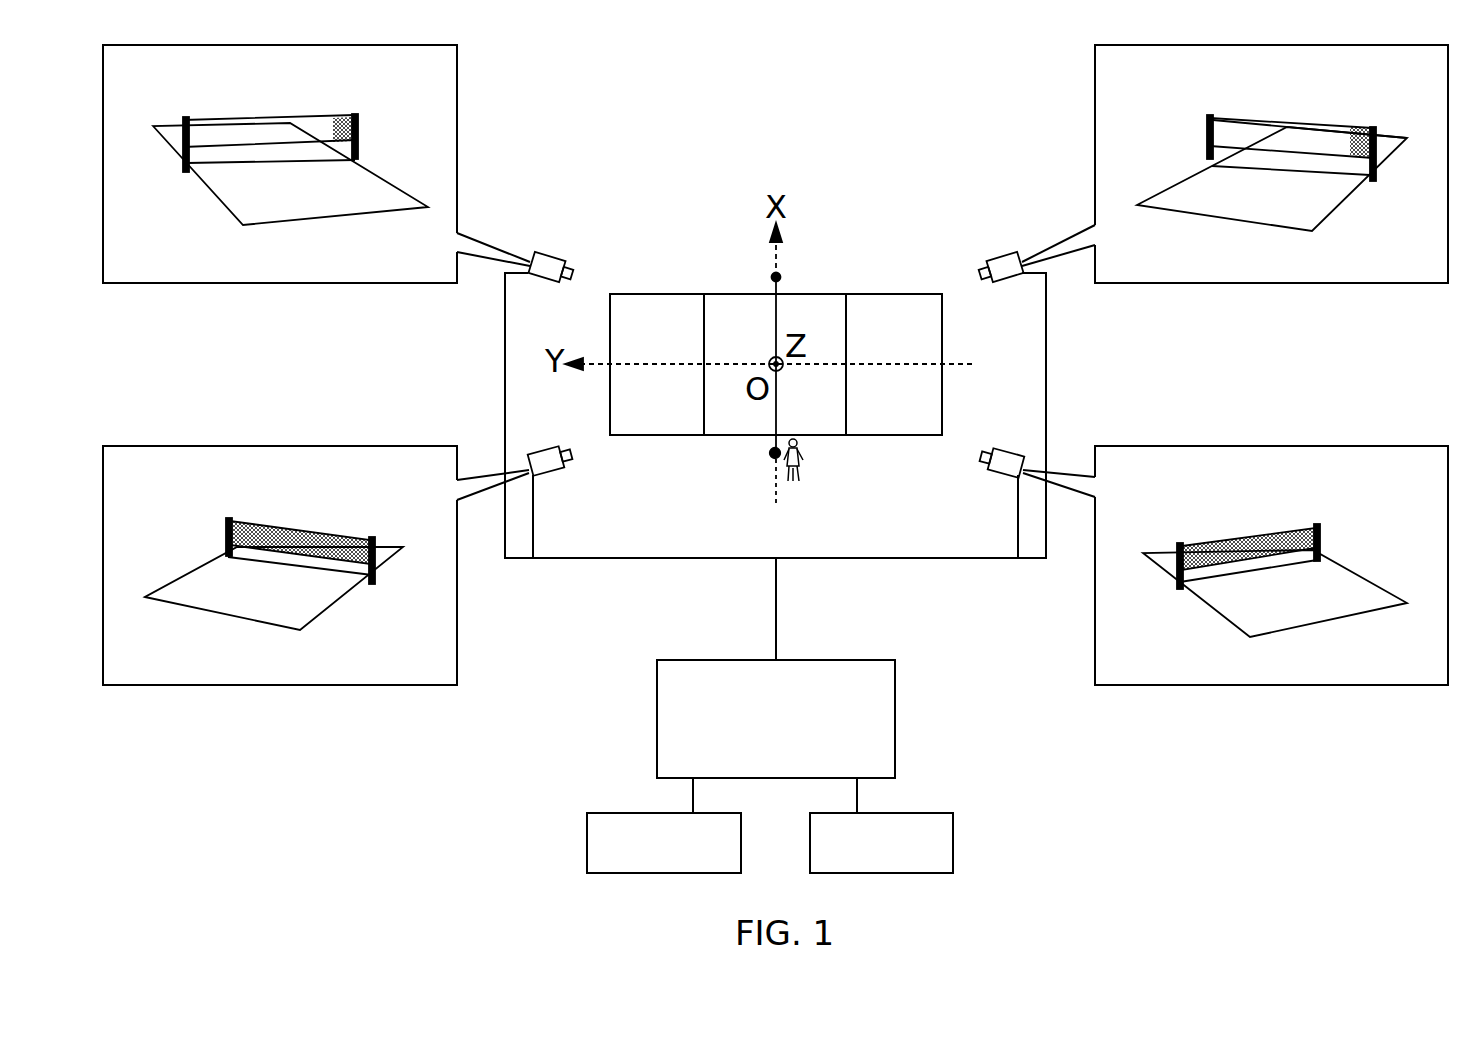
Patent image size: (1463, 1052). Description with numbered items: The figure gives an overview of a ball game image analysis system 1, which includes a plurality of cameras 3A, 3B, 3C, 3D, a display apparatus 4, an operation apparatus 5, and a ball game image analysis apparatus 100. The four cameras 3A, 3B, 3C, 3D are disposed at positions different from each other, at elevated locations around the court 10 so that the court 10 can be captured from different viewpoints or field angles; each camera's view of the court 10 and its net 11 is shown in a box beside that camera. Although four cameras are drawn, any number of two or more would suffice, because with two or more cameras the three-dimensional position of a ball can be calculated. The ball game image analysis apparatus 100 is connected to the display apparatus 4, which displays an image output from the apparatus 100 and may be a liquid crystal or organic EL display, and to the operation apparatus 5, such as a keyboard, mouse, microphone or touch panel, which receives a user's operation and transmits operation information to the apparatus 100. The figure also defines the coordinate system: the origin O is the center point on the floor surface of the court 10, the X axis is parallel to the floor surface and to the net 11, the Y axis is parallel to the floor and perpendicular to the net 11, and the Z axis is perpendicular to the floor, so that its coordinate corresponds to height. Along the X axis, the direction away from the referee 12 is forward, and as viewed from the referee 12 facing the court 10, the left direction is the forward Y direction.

The ball game image analysis system 1 is at (795, 59).
The camera 3A is at (557, 474).
The camera 3B is at (564, 253).
The camera 3C is at (1000, 256).
The camera 3D is at (990, 474).
The court 10 is at (641, 294).
The net 11 is at (772, 444).
The referee 12 is at (802, 470).
The ball game image analysis apparatus 100 is at (896, 720).
The display apparatus 4 is at (586, 857).
The operation apparatus 5 is at (954, 853).